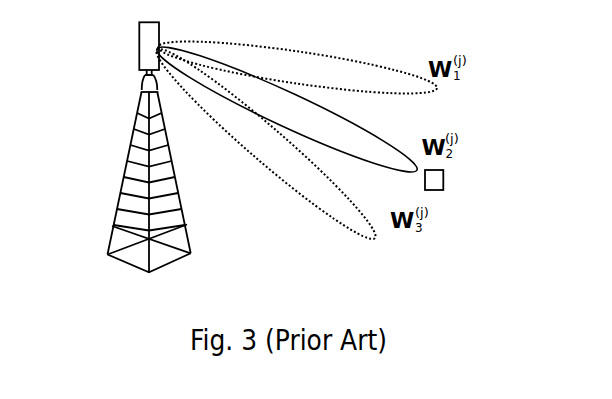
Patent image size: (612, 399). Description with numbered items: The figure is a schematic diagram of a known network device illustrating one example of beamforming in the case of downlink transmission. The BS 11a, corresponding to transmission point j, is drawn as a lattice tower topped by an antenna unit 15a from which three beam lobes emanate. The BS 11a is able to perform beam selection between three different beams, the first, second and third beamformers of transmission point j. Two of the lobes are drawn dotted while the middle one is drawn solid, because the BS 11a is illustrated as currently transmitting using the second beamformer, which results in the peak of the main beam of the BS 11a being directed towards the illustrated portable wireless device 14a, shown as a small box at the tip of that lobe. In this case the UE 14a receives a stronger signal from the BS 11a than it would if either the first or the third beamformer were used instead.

The base station antenna array 15a is at (139, 48).
The BS 11a is at (120, 258).
The portable wireless device 14a is at (443, 180).